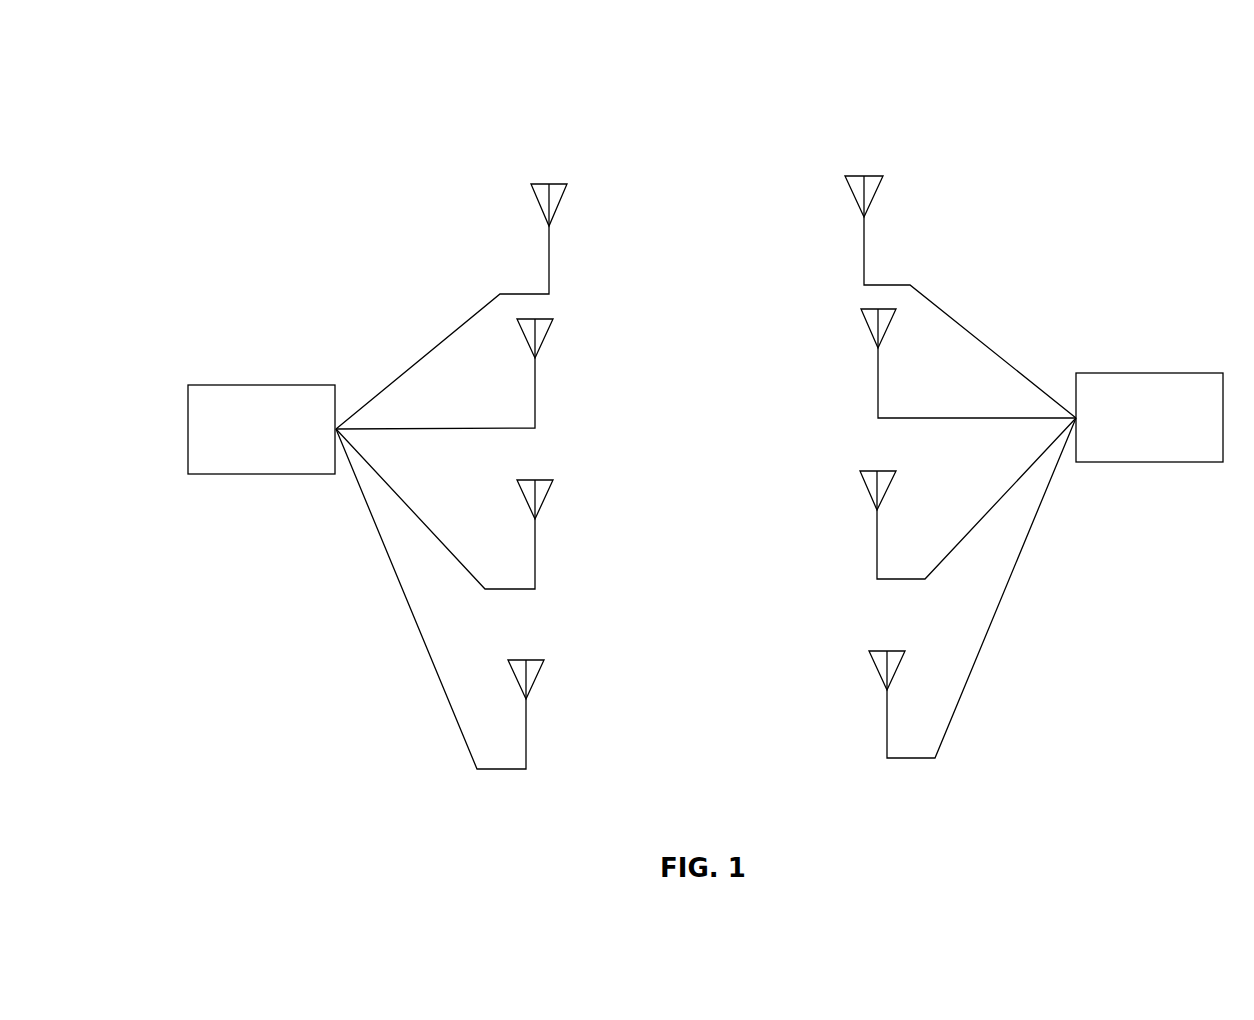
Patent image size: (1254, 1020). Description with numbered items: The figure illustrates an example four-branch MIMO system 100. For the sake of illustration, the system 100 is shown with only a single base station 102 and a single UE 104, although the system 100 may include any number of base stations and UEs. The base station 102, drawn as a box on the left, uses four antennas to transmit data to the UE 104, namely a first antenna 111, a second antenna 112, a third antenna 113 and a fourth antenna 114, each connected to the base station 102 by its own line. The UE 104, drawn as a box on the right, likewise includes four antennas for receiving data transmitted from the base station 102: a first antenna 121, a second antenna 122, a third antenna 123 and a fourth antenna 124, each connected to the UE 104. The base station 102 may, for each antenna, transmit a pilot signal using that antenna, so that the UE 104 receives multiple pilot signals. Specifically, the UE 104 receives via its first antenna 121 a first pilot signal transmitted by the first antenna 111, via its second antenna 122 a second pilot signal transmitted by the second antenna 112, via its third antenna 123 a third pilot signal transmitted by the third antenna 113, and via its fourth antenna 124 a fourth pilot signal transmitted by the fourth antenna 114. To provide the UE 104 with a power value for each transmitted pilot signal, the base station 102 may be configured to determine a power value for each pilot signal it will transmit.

The 4 branch MIMO system 100 is at (238, 108).
The base station 102 is at (257, 408).
The UE 104 is at (1156, 404).
The first antenna 111 is at (490, 299).
The second antenna 112 is at (485, 360).
The third antenna 113 is at (480, 509).
The fourth antenna 114 is at (480, 599).
The first antenna 121 is at (924, 290).
The second antenna 122 is at (934, 359).
The third antenna 123 is at (934, 498).
The fourth antenna 124 is at (939, 588).